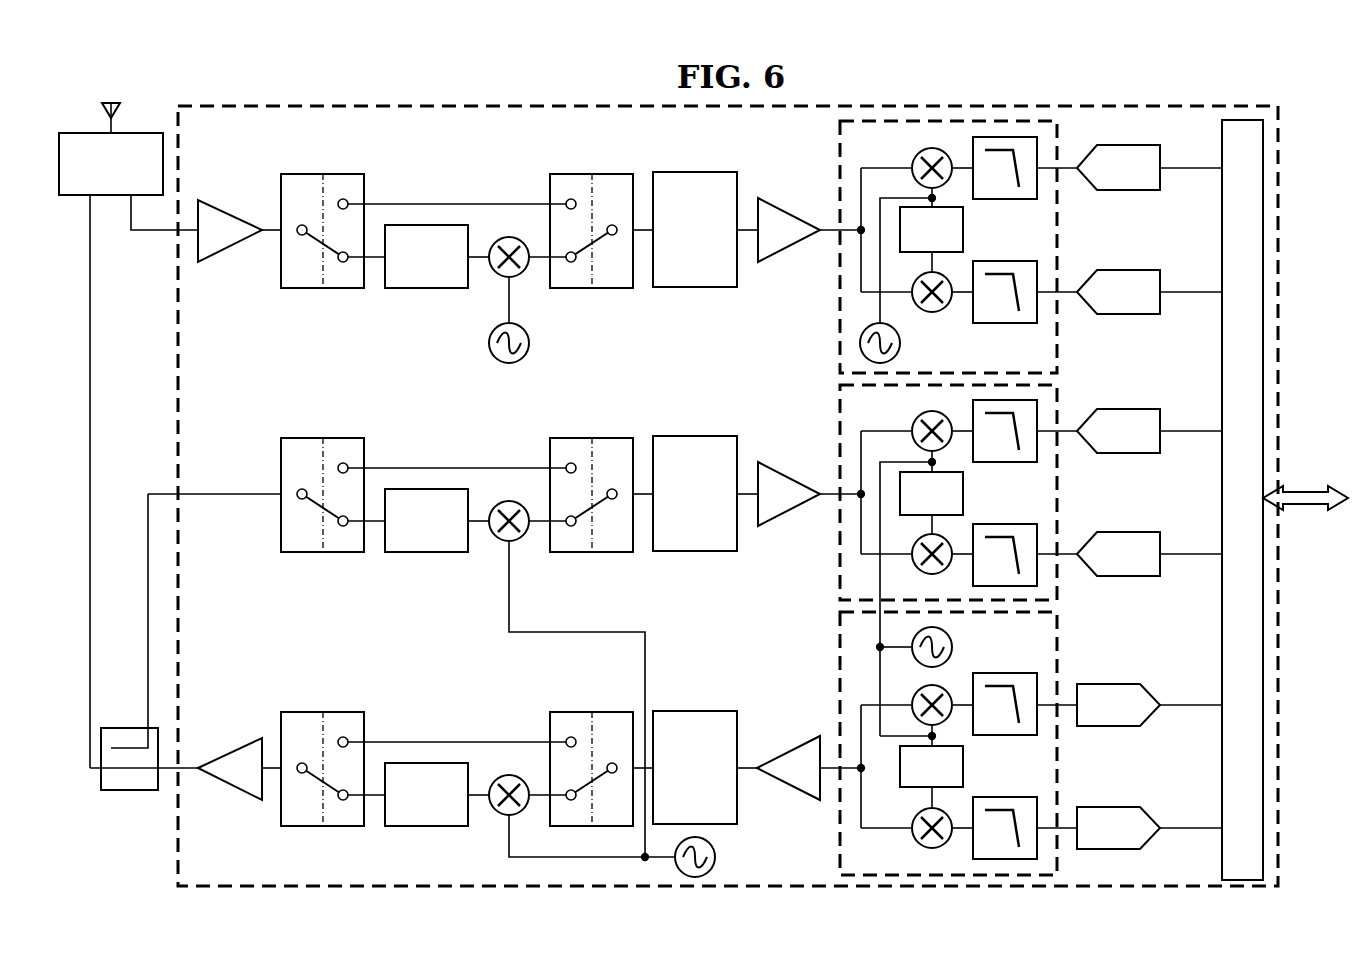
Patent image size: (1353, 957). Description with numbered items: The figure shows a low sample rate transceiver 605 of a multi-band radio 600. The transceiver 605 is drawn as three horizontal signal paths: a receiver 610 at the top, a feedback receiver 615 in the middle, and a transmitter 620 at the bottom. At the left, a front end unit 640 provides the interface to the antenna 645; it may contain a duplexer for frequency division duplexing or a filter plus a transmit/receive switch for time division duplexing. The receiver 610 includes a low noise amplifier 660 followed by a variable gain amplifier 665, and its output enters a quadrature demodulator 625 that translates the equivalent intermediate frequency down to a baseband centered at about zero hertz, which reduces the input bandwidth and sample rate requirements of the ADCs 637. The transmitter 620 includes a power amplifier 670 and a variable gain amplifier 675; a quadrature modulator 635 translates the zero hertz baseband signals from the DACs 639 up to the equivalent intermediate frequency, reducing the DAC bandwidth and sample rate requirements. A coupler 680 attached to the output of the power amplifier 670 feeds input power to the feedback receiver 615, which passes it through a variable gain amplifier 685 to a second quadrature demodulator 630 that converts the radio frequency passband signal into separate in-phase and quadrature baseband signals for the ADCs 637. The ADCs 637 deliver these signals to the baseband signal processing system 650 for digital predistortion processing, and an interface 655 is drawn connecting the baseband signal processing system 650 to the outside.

The multi-band radio 600 is at (1292, 82).
The transceiver 605 is at (458, 104).
The receiver 610 is at (402, 167).
The feedback receiver 615 is at (402, 434).
The transmitter 620 is at (402, 708).
The quadrature demodulator 625 is at (1062, 321).
The quadrature demodulator 630 is at (1064, 593).
The quadrature modulator 635 is at (1064, 672).
The ADCs 637 is at (1118, 191).
The DACs 639 is at (1111, 727).
The front end unit 640 is at (135, 132).
The antenna 645 is at (108, 103).
The baseband signal processing system 650 is at (1222, 385).
The interface 655 is at (1298, 506).
The low noise amplifier 660 is at (234, 222).
The variable gain amplifier 665 is at (789, 217).
The power amplifier 670 is at (235, 753).
The variable gain amplifier 675 is at (795, 751).
The coupler 680 is at (131, 790).
The variable gain amplifier 685 is at (789, 481).